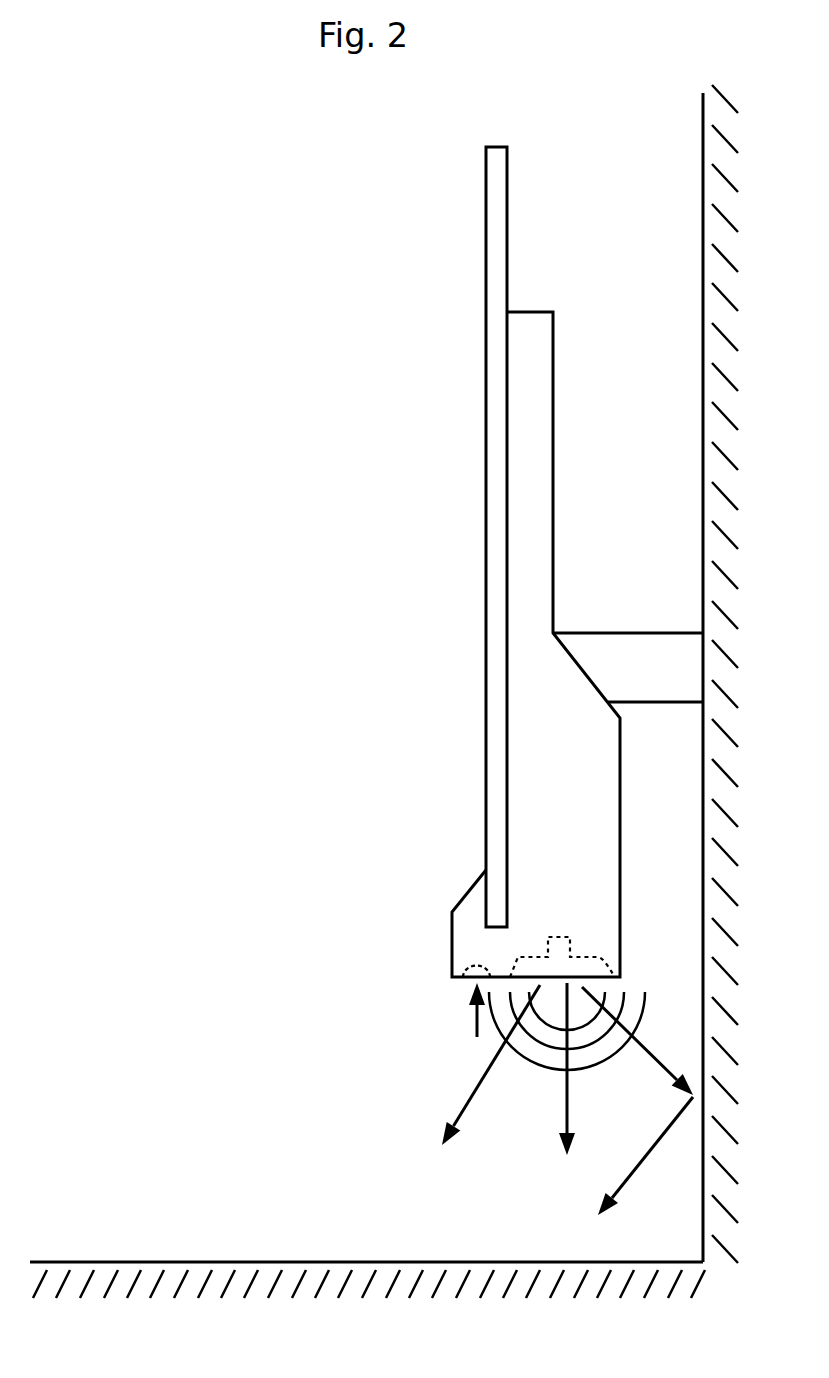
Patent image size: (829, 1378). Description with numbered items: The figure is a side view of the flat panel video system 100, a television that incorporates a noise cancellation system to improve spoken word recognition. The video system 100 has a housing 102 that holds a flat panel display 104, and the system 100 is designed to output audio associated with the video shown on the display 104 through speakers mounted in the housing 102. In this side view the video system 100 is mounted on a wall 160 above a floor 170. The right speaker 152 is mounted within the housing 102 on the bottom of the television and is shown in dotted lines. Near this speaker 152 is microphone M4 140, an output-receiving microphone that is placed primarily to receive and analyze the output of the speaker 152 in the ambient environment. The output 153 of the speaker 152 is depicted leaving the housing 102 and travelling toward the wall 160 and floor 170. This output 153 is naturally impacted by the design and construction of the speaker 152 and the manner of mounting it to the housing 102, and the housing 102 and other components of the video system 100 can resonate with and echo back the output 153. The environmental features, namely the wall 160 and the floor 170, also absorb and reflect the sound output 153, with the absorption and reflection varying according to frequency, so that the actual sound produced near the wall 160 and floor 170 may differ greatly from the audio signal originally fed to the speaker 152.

The flat panel video system 100 is at (499, 146).
The housing 102 is at (554, 329).
The flat panel display 104 is at (486, 536).
The microphone M4 140 is at (437, 985).
The right speaker 152 is at (575, 952).
The output of the speaker 153 is at (445, 1133).
The wall 160 is at (703, 508).
The floor 170 is at (30, 1262).
The microphone M4 is at (462, 987).